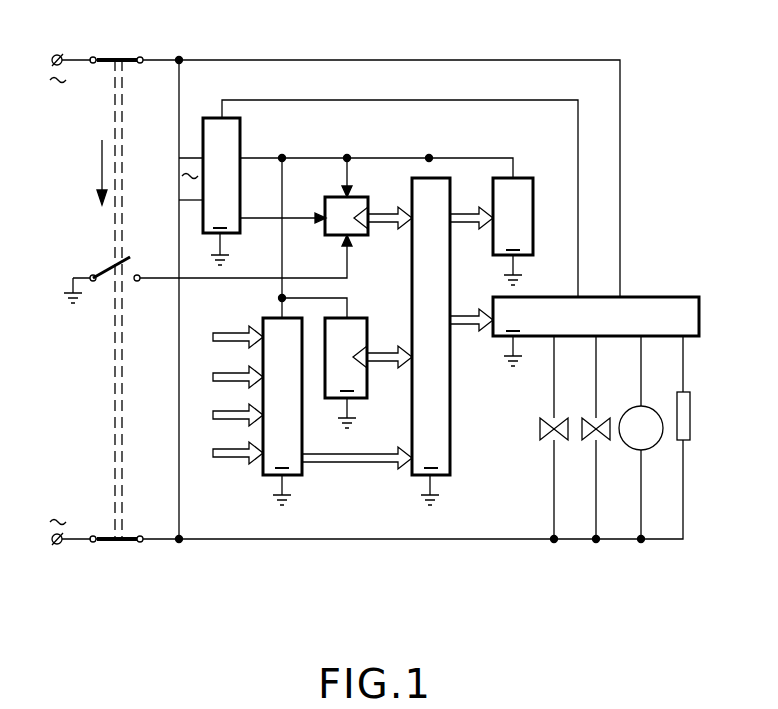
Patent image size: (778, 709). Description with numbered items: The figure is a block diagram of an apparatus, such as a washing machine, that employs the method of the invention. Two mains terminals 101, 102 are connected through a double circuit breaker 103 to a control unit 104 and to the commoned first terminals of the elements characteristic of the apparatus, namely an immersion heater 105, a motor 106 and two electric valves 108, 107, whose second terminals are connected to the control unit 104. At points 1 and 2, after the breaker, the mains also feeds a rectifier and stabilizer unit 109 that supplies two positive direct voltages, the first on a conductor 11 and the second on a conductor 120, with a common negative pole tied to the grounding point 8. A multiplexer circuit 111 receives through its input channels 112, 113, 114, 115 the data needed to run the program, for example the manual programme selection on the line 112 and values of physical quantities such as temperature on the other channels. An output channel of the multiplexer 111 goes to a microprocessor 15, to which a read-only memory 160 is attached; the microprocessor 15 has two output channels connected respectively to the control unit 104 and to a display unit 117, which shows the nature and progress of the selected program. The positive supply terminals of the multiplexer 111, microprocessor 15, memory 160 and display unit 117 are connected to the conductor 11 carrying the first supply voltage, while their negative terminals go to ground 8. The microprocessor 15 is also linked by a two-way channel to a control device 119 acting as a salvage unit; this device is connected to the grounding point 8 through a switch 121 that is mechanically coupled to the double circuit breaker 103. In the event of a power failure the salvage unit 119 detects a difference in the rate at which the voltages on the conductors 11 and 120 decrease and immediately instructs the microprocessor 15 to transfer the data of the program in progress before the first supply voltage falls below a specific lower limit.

The mains terminal 101 is at (47, 64).
The mains terminal 102 is at (62, 548).
The double circuit breaker 103 is at (118, 386).
The control unit 104 is at (632, 306).
The immersion heater 105 is at (677, 402).
The motor 106 is at (634, 408).
The electric valve 107 is at (593, 416).
The electric valve 108 is at (550, 416).
The rectifier and stabilizer unit 109 is at (205, 124).
The multiplexer circuit 111 is at (268, 318).
The input channel 112 is at (238, 338).
The input channel 113 is at (238, 378).
The input channel 114 is at (238, 416).
The input channel 115 is at (238, 456).
The display unit 117 is at (523, 186).
The control device (salvage unit) 119 is at (356, 206).
The conductor 120 is at (277, 217).
The switch 121 is at (108, 265).
The read-only memory 160 is at (356, 328).
The microprocessor 15 is at (434, 456).
The conductor 11 is at (368, 157).
The mains connection point 1 is at (198, 158).
The mains connection point 2 is at (198, 202).
The grounding point 8 is at (89, 288).